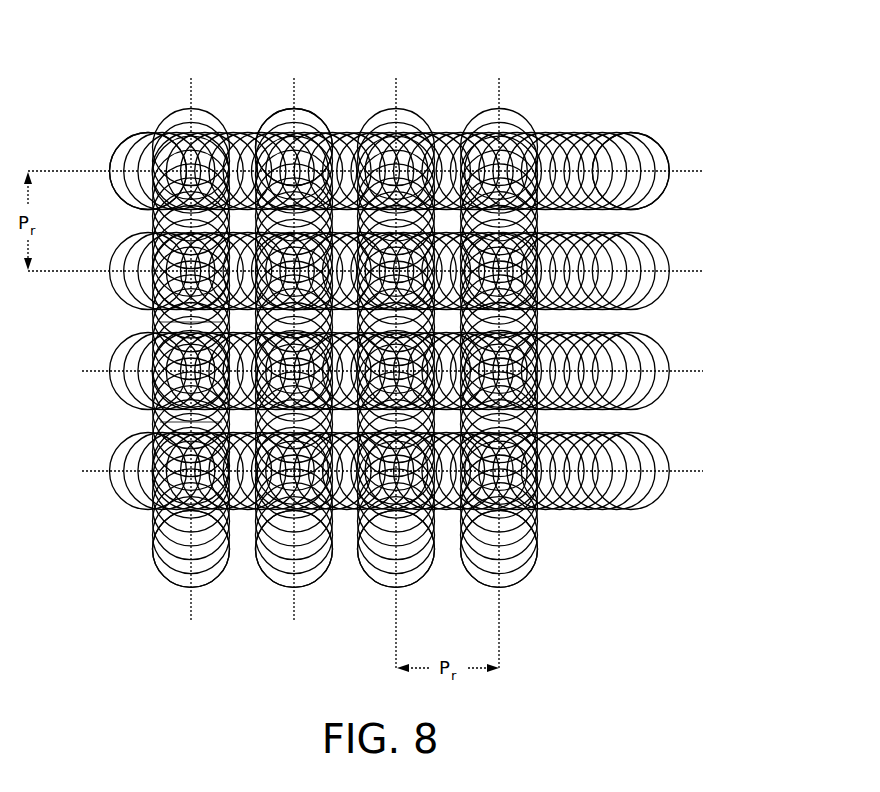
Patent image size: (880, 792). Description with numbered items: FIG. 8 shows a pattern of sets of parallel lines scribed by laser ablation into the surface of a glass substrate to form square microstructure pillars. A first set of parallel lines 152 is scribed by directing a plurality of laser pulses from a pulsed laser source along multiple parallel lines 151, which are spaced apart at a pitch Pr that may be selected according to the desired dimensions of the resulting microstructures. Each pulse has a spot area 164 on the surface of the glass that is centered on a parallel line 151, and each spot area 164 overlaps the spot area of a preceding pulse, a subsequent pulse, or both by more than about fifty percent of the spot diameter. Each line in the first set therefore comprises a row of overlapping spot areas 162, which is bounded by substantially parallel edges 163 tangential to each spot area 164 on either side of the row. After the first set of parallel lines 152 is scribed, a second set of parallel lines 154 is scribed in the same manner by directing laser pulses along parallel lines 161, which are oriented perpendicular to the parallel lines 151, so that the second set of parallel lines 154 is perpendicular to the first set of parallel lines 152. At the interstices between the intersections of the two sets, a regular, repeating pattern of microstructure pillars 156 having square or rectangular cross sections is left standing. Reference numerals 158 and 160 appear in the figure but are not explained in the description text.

The parallel line 151 is at (191, 620).
The first set of parallel lines 152 is at (150, 73).
The second set of parallel lines 154 is at (728, 126).
The microstructure pillar 156 is at (163, 326).
The array of row spots 158 is at (603, 121).
The row of overlapping spots 160 is at (660, 137).
The parallel line 161 is at (690, 174).
The row of overlapping spot areas 162 is at (131, 557).
The parallel edge 163 is at (134, 138).
The spot area 164 is at (173, 586).